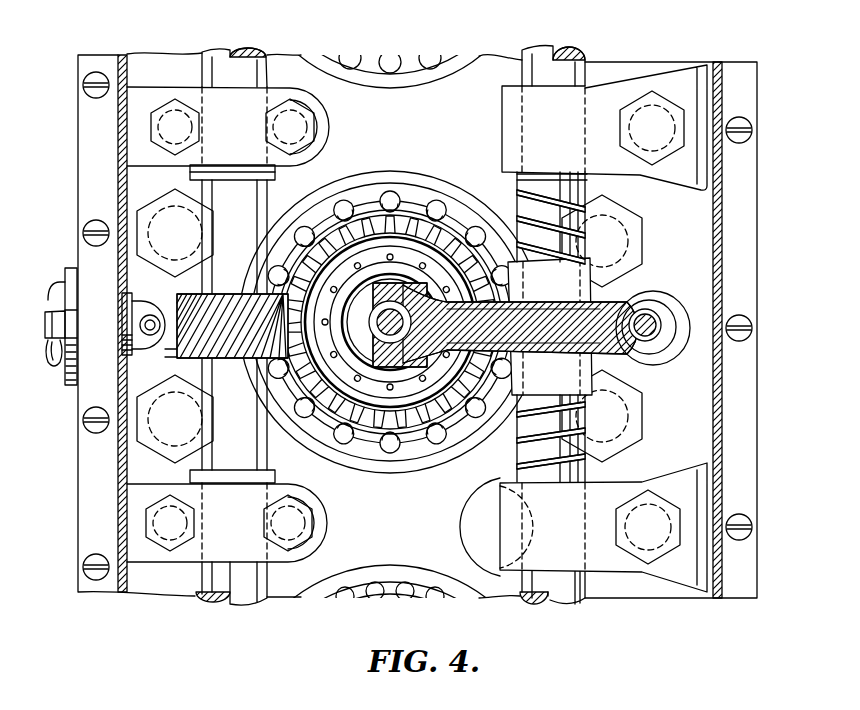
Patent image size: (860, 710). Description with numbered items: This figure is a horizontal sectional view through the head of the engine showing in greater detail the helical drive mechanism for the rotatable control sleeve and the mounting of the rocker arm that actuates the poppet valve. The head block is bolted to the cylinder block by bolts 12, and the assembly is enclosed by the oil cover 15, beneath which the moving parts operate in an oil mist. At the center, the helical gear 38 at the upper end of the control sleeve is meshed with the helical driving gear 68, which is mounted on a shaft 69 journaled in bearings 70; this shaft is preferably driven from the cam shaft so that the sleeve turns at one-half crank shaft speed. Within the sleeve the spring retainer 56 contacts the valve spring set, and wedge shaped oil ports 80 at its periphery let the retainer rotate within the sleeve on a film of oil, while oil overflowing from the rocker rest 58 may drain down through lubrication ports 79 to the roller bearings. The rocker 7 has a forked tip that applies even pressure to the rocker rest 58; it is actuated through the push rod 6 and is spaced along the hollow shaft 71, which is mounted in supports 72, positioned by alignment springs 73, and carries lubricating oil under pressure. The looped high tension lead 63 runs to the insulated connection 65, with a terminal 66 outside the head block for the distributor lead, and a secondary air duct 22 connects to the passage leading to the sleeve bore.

The push rod 6 is at (652, 311).
The rocker 7 is at (536, 316).
The bolts 12 is at (163, 203).
The cover 15 is at (116, 514).
The secondary air duct 22 is at (55, 365).
The helical gear 38 is at (400, 446).
The spring retainer 56 is at (383, 243).
The rocker rest 58 is at (378, 327).
The high tension lead 63 is at (147, 313).
The connection 65 is at (143, 352).
The terminal 66 is at (52, 322).
The helical driving gear 68 is at (180, 296).
The shaft 69 is at (184, 360).
The bearings 70 is at (327, 121).
The hollow shaft 71 is at (522, 70).
The supports 72 is at (503, 125).
The alignment springs 73 is at (571, 199).
The lubrication ports 79 is at (449, 243).
The wedge shaped oil ports 80 is at (390, 435).